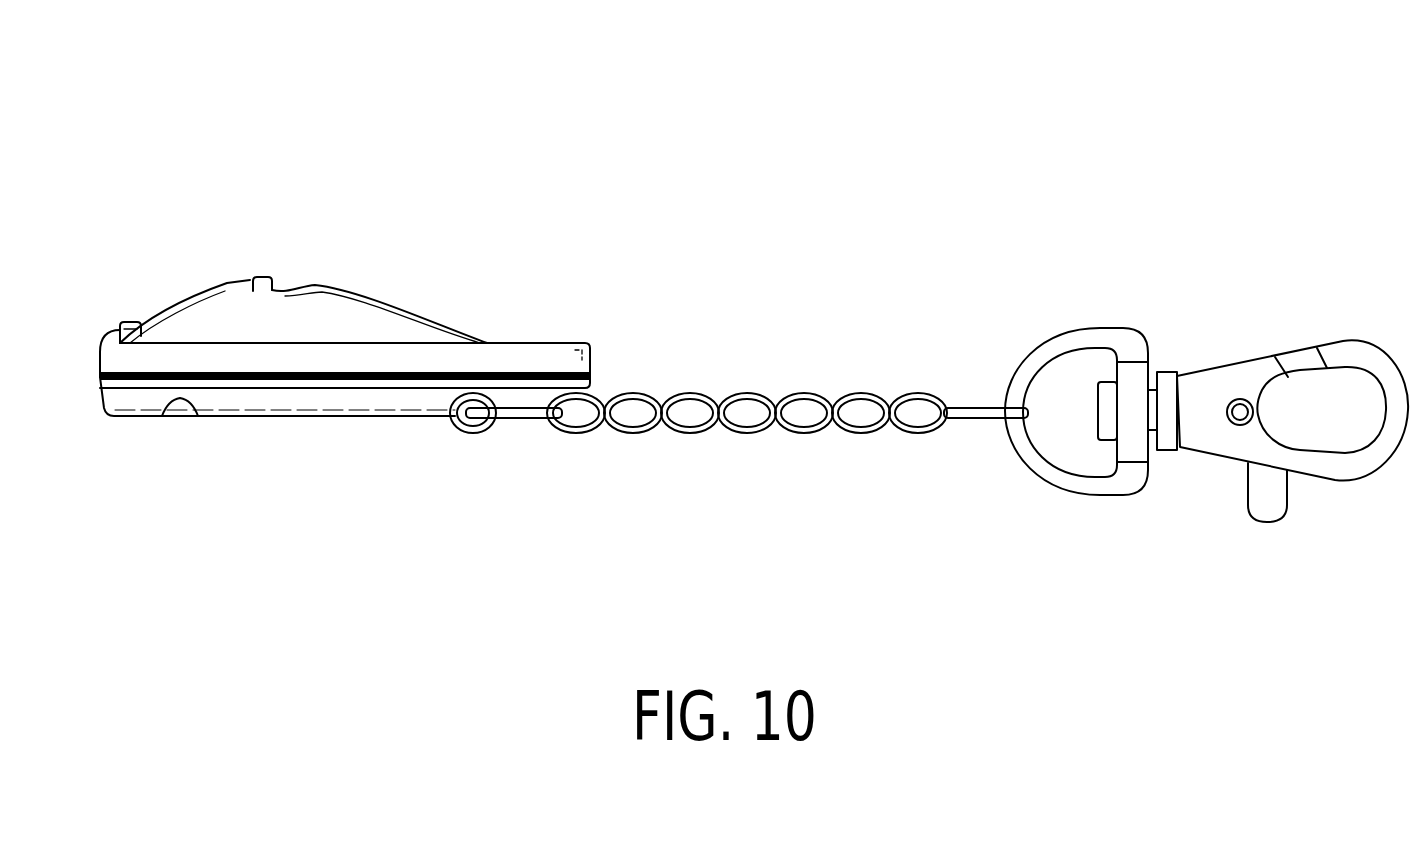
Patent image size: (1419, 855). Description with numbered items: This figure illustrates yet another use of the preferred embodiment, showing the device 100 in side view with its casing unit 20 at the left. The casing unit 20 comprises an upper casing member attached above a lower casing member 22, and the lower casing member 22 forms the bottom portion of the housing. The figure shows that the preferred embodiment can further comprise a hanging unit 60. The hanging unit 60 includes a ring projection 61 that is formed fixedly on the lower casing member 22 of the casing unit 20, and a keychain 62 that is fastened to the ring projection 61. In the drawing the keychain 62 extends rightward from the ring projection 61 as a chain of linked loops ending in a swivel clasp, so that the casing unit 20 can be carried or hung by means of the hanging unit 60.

The portable memory device assembly 100 is at (328, 196).
The casing unit 20 is at (550, 342).
The lower casing member 22 is at (385, 418).
The hanging unit 60 is at (787, 415).
The ring projection 61 is at (465, 433).
The keychain 62 is at (803, 433).